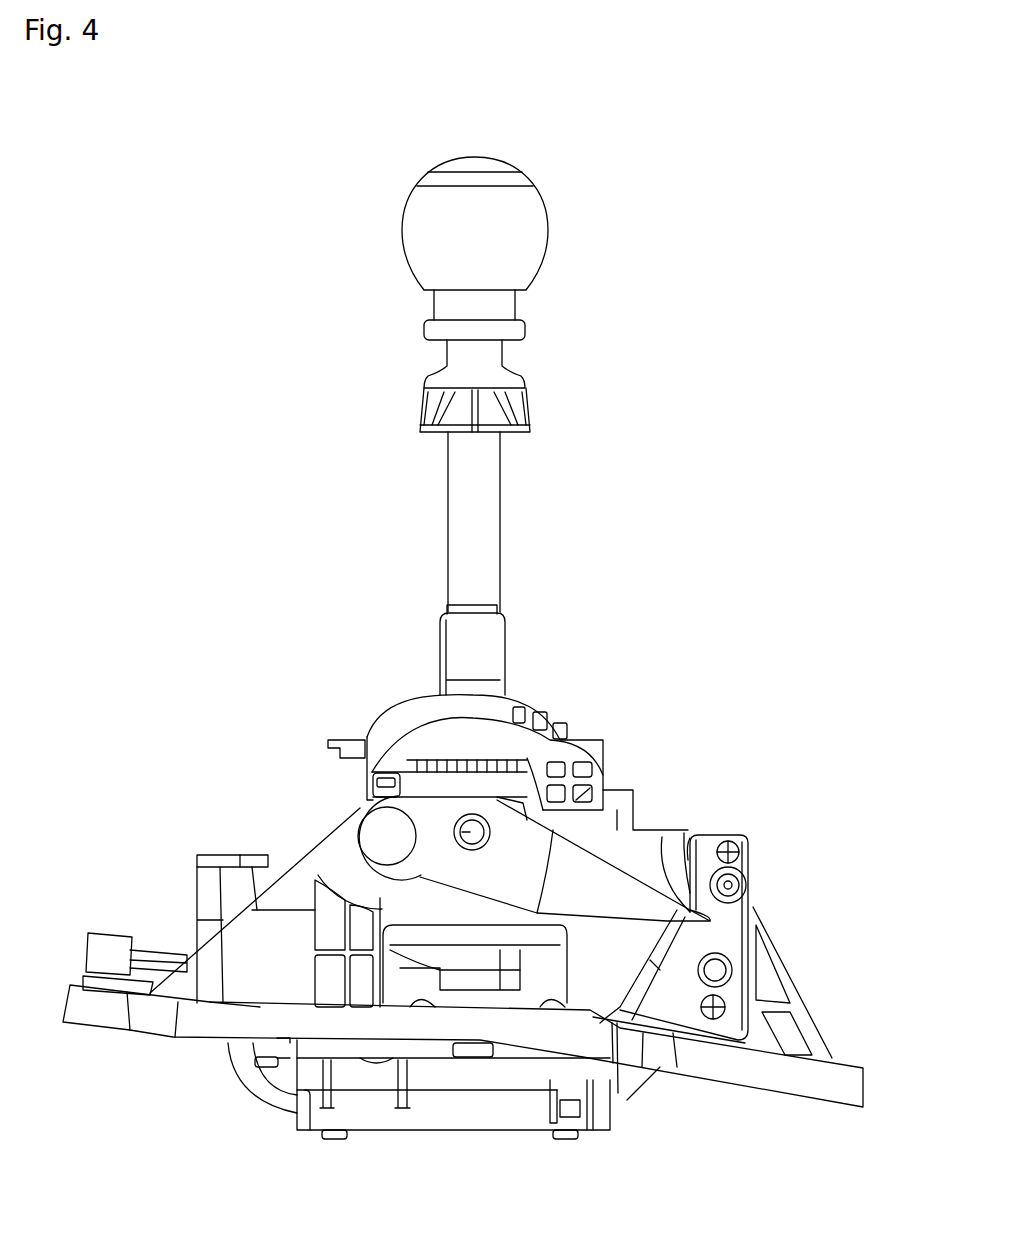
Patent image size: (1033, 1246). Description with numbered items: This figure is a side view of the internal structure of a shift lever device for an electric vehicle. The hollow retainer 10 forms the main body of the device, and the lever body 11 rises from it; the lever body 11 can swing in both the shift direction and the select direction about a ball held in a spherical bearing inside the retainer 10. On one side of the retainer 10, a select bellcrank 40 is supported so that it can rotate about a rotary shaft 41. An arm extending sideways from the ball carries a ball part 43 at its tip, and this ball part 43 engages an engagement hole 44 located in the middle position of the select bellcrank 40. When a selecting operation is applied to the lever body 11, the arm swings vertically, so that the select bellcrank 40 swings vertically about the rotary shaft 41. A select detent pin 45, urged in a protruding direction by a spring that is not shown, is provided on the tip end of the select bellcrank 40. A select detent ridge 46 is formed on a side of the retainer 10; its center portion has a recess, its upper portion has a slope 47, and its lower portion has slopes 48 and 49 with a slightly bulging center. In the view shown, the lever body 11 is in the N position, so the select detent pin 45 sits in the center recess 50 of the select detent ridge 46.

The retainer 10 is at (620, 802).
The lever body 11 is at (458, 527).
The select bellcrank 40 is at (618, 880).
The rotary shaft 41 is at (377, 842).
The ball part 43 is at (364, 808).
The engagement hole 44 is at (462, 815).
The select detent pin 45 is at (663, 878).
The select detent ridge 46 is at (740, 938).
The slope 47 is at (693, 845).
The slope 48 is at (667, 922).
The slope 49 is at (655, 958).
The center recess 50 is at (740, 917).